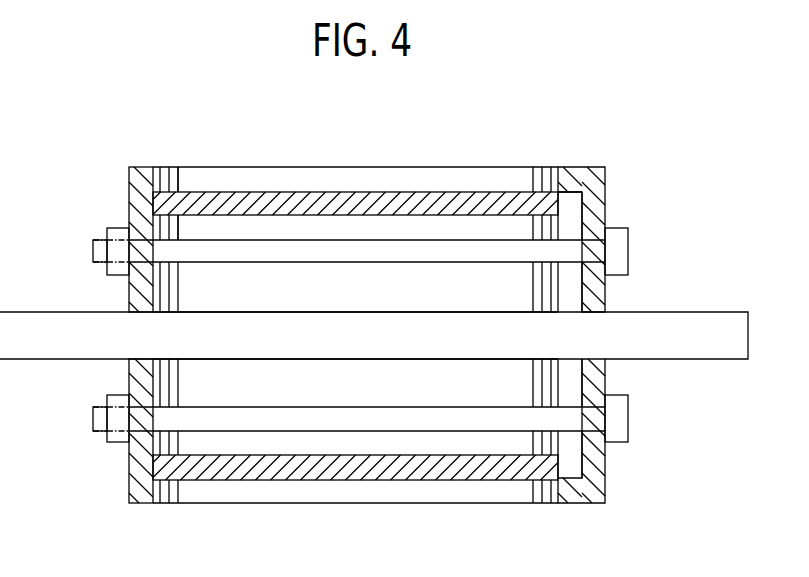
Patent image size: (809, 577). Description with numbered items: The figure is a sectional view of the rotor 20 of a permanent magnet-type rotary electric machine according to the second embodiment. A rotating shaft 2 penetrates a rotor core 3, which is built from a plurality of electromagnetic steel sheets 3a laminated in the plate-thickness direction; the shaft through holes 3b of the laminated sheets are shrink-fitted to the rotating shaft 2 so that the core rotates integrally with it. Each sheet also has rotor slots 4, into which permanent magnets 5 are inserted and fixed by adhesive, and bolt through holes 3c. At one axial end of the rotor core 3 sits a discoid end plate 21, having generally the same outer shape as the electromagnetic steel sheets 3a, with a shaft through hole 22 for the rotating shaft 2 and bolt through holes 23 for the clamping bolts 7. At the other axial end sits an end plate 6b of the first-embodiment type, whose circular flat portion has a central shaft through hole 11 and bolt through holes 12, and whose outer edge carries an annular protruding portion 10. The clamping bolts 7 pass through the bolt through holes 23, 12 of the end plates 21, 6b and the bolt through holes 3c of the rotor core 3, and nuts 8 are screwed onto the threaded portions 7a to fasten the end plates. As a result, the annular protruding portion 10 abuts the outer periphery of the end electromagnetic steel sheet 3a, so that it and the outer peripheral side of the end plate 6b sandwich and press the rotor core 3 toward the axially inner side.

The rotating shaft 2 is at (712, 326).
The rotor core 3 is at (243, 180).
The electromagnetic steel sheets 3a is at (178, 167).
The shaft through hole 3b is at (483, 323).
The bolt through holes 3c is at (327, 243).
The rotor slots 4 is at (447, 193).
The permanent magnets 5 is at (289, 180).
The end plate 6b is at (605, 171).
The clamping bolts 7 is at (628, 254).
The threaded portions 7a is at (93, 248).
The nuts 8 is at (107, 272).
The annular protruding portion 10 is at (568, 167).
The shaft through hole 11 is at (592, 360).
The bolt through holes 12 is at (597, 241).
The rotor 20 is at (598, 137).
The discoid end plate 21 is at (128, 168).
The shaft through hole 22 is at (143, 358).
The bolt through holes 23 is at (128, 242).